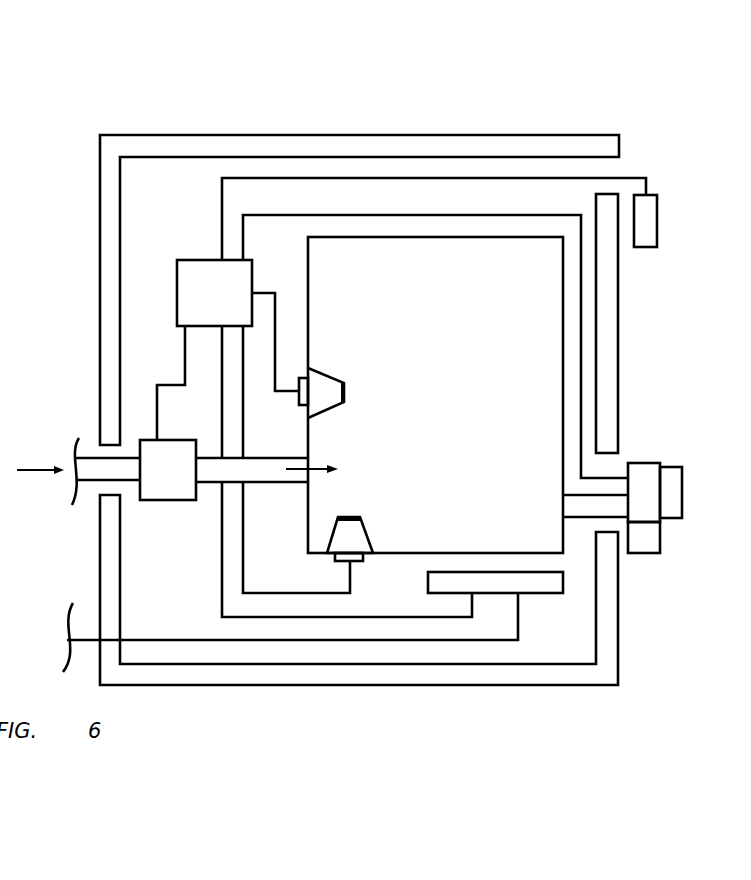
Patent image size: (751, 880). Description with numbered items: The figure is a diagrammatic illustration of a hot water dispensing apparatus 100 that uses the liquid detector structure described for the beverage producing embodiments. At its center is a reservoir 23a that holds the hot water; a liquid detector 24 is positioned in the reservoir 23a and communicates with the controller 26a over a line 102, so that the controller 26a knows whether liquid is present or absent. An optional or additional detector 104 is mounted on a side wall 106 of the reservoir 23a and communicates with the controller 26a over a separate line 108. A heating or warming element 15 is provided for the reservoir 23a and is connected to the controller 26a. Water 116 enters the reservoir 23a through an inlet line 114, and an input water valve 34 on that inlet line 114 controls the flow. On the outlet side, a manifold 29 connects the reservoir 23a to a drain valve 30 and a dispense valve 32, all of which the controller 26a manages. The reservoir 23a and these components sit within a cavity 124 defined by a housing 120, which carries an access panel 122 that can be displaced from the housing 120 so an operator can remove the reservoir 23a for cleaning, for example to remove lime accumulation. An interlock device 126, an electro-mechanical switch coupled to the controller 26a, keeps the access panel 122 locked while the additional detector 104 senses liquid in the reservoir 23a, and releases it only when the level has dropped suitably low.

The hot water dispensing apparatus 100 is at (211, 103).
The reservoir 23a is at (410, 247).
The housing 120 is at (467, 145).
The cavity 124 is at (538, 177).
The interlock device 126 is at (657, 215).
The access panel 122 is at (619, 323).
The side wall 106 is at (308, 260).
The line 108 is at (275, 350).
The additional detector 104 is at (330, 372).
The controller 26a is at (177, 290).
The input water valve 34 is at (160, 490).
The inlet line 114 is at (93, 475).
The water 116 is at (303, 477).
The liquid detector 24 is at (370, 533).
The heating or warming element 15 is at (540, 587).
The line 102 is at (242, 570).
The manifold 29 is at (642, 470).
The drain valve 30 is at (643, 543).
The dispense valve 32 is at (673, 492).